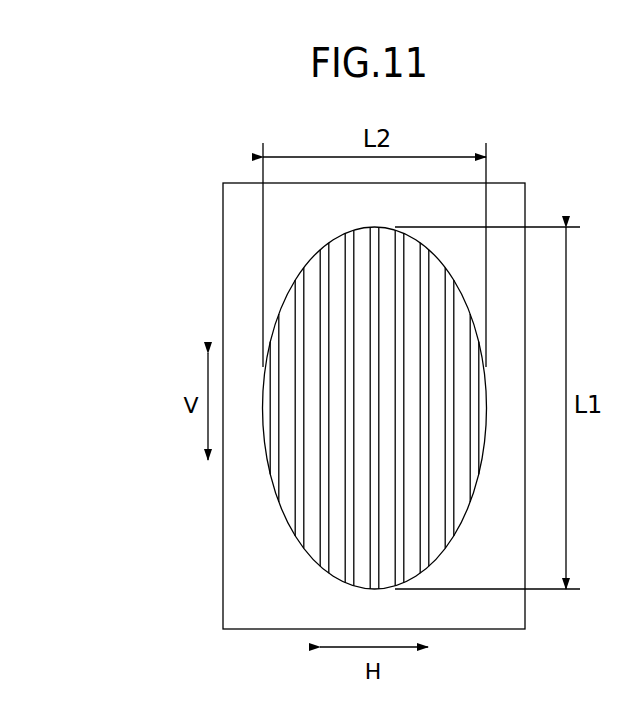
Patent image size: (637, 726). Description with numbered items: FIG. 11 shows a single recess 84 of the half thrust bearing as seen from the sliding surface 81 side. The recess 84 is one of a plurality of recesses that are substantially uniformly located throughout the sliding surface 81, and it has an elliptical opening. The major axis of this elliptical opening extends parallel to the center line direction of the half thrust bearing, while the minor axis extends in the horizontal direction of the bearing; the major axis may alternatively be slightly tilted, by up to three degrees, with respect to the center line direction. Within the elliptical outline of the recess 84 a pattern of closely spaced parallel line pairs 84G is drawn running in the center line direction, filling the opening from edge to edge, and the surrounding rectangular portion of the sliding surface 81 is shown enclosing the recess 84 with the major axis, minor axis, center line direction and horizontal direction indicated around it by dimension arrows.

The sliding surface 81 is at (239, 232).
The recess 84 is at (312, 557).
The stripe grooves (line pattern) 84G is at (298, 493).